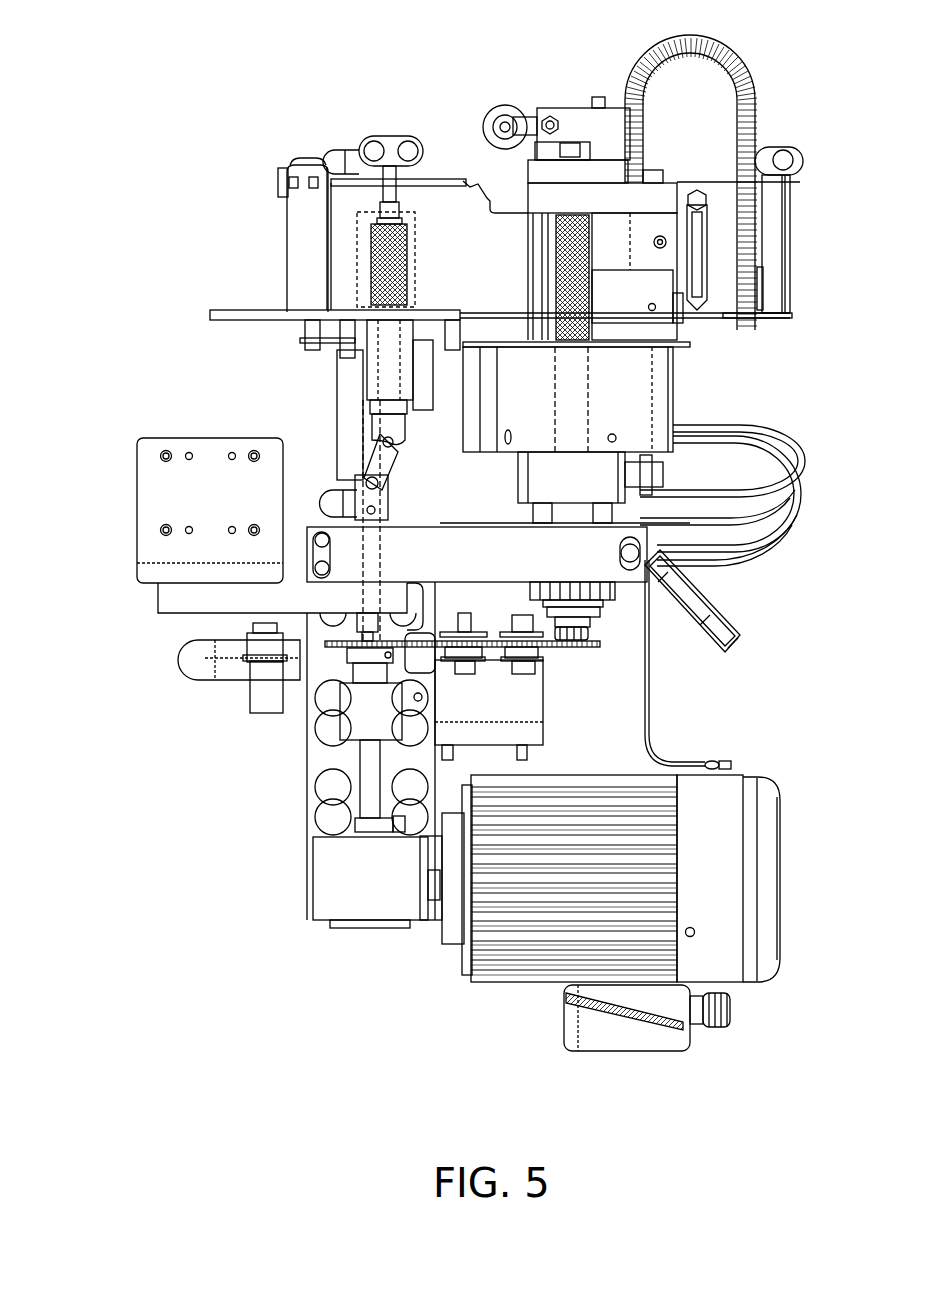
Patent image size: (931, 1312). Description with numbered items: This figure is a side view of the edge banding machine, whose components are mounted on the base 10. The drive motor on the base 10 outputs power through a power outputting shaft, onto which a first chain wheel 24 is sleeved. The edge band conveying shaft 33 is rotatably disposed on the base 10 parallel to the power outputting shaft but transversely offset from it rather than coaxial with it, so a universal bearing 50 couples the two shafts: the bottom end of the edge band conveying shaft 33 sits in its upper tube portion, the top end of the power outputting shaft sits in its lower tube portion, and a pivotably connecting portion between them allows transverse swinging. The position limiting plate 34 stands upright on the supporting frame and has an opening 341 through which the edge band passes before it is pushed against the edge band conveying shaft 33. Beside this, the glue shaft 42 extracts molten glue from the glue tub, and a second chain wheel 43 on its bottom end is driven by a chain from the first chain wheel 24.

The base 10 is at (148, 638).
The first chain wheel 24 is at (340, 644).
The edge band conveying shaft 33 is at (390, 278).
The position limiting plate 34 is at (436, 203).
The opening 341 is at (358, 238).
The glue shaft 42 is at (567, 215).
The second chain wheel 43 is at (583, 633).
The universal bearing 50 is at (365, 468).